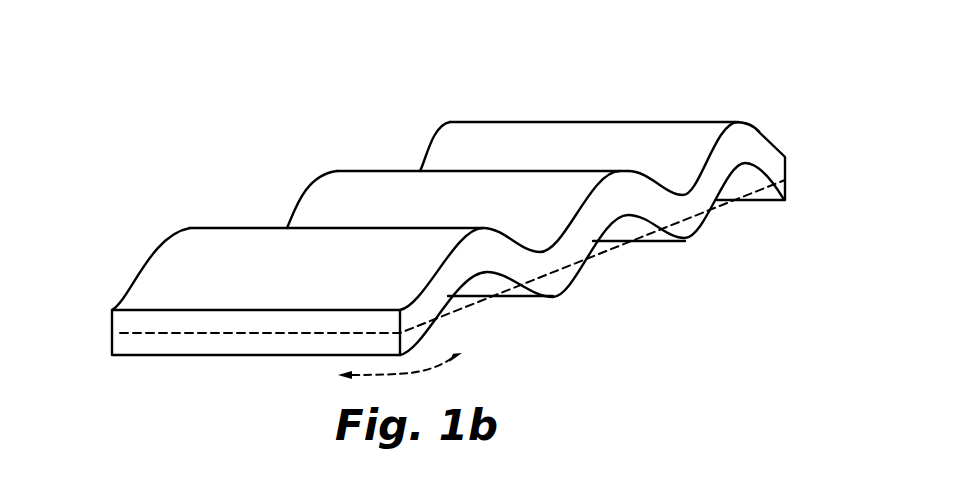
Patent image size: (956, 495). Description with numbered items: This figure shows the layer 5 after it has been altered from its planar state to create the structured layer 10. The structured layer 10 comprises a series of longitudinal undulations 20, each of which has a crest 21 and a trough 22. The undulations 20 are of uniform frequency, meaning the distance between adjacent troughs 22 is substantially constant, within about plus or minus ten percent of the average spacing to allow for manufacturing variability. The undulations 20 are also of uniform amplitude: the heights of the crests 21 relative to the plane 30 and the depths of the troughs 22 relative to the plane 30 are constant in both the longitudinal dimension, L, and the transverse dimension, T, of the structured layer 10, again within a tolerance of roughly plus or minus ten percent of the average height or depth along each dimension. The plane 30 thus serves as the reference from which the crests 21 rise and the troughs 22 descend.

The structured layer 10 is at (197, 173).
The layer 5 is at (156, 360).
The longitudinal undulations 20 is at (145, 264).
The crest 21 is at (175, 232).
The trough 22 is at (556, 295).
The plane 30 is at (132, 333).